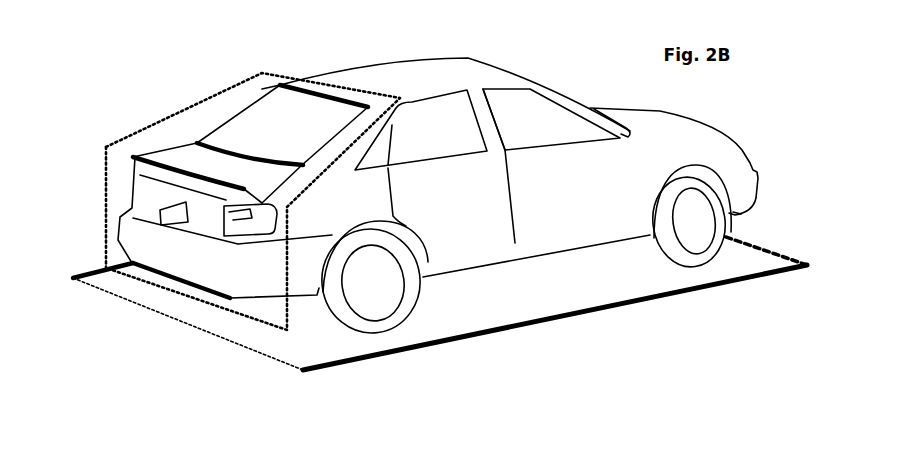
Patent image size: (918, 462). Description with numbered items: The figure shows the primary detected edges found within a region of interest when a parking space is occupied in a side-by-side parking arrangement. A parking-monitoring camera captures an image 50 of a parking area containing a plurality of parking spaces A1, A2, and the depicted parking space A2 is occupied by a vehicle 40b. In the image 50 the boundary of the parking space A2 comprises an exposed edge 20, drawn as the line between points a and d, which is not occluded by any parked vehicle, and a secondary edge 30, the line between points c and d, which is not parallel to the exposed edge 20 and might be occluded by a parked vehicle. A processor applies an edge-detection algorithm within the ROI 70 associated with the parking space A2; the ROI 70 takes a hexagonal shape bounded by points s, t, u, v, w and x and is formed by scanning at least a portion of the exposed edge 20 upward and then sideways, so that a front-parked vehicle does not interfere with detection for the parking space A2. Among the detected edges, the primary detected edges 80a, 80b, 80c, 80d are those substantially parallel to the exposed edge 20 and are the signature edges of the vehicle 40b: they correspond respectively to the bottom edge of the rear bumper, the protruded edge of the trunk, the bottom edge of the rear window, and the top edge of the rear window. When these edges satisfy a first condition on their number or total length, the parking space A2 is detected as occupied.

The exposed edge 20 is at (177, 320).
The secondary edge 30 is at (455, 340).
The vehicle 40b is at (551, 119).
The image 50 is at (266, 352).
The ROI 70 is at (175, 113).
The primary detected edge 80a is at (187, 283).
The primary detected edge 80b is at (183, 181).
The primary detected edge 80c is at (253, 157).
The primary detected edge 80d is at (297, 90).
The parking space A1 is at (585, 363).
The parking space A2 is at (614, 259).